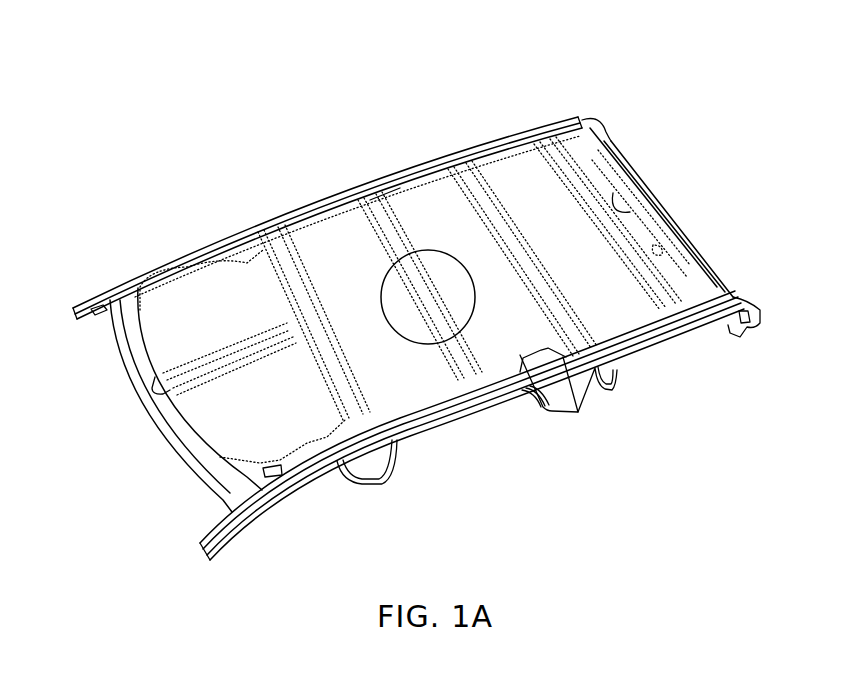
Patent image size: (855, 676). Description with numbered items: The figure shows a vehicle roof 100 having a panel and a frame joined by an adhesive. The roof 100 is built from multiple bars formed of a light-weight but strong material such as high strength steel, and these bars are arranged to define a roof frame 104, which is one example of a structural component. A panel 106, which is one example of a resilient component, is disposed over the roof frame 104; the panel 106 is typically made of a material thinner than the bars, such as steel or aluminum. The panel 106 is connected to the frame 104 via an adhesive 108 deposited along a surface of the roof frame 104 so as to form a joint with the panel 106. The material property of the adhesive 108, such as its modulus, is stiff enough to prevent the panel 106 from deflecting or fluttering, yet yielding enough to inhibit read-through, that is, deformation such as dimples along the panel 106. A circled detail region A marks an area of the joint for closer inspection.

The roof 100 is at (660, 72).
The roof frame 104 is at (360, 193).
The panel 106 is at (332, 232).
The adhesive 108 is at (355, 227).
The detail region A is at (473, 307).